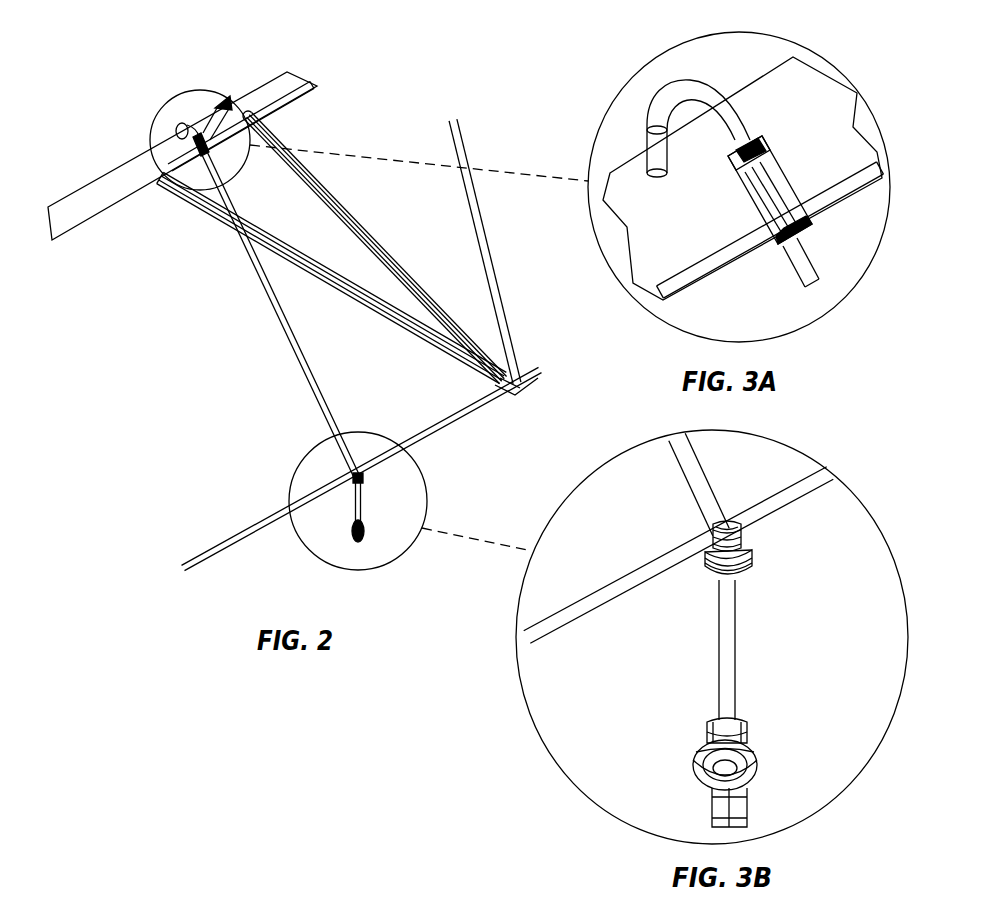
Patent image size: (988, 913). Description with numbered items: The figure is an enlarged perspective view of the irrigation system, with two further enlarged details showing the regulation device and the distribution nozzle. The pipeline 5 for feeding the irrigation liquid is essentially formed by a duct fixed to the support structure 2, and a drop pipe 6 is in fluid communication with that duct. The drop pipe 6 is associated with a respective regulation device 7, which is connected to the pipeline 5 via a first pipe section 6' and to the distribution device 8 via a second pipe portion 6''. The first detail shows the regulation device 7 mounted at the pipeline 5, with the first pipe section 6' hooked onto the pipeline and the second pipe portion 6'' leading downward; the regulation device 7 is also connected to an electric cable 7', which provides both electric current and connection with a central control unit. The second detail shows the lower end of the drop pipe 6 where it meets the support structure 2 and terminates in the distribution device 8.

In FIG. 2, the support structure 2 is at (313, 262).
In FIG. 3B, the support structure 2 is at (650, 580).
In FIG. 2, the pipeline 5 is at (88, 200).
In FIG. 3A, the pipeline 5 is at (797, 92).
In FIG. 2, the drop pipe 6 is at (375, 495).
In FIG. 3B, the drop pipe 6 is at (760, 620).
In FIG. 2, the first pipe section 6' is at (162, 81).
In FIG. 3A, the first pipe section 6' is at (698, 113).
In FIG. 2, the second pipe portion 6'' is at (255, 314).
In FIG. 3A, the second pipe portion 6'' is at (772, 277).
In FIG. 3B, the second pipe portion 6'' is at (676, 484).
In FIG. 2, the regulation device 7 is at (225, 81).
In FIG. 3A, the regulation device 7 is at (780, 181).
In FIG. 2, the electric cable 7' is at (269, 100).
In FIG. 3A, the electric cable 7' is at (813, 207).
In FIG. 2, the distribution device 8 is at (364, 552).
In FIG. 3B, the distribution device 8 is at (680, 756).